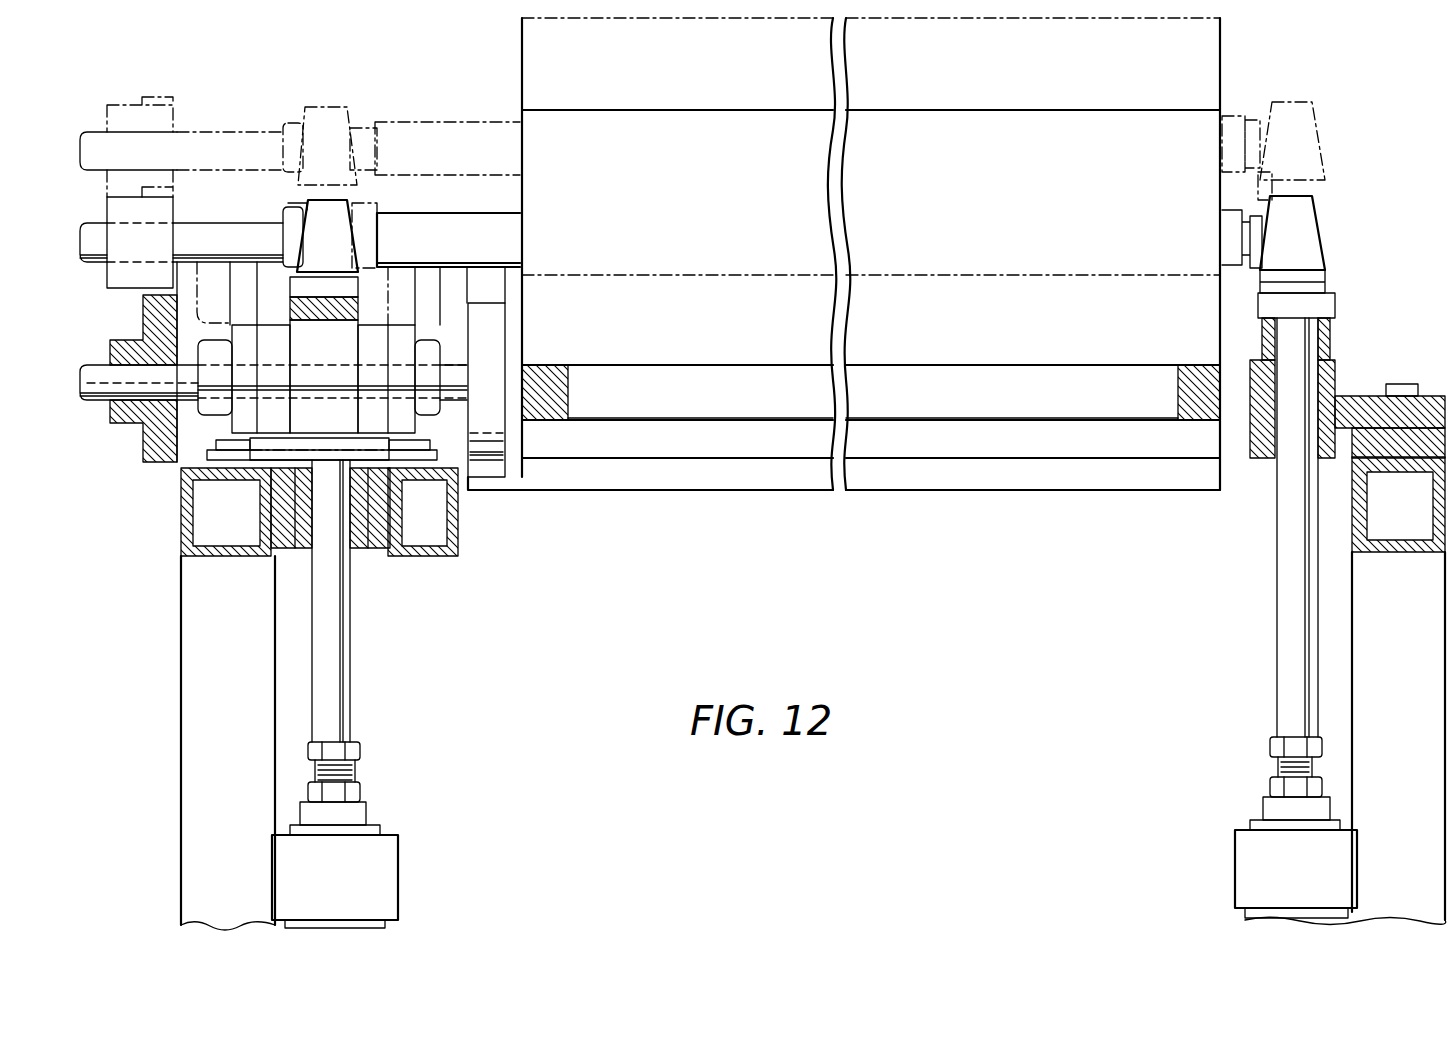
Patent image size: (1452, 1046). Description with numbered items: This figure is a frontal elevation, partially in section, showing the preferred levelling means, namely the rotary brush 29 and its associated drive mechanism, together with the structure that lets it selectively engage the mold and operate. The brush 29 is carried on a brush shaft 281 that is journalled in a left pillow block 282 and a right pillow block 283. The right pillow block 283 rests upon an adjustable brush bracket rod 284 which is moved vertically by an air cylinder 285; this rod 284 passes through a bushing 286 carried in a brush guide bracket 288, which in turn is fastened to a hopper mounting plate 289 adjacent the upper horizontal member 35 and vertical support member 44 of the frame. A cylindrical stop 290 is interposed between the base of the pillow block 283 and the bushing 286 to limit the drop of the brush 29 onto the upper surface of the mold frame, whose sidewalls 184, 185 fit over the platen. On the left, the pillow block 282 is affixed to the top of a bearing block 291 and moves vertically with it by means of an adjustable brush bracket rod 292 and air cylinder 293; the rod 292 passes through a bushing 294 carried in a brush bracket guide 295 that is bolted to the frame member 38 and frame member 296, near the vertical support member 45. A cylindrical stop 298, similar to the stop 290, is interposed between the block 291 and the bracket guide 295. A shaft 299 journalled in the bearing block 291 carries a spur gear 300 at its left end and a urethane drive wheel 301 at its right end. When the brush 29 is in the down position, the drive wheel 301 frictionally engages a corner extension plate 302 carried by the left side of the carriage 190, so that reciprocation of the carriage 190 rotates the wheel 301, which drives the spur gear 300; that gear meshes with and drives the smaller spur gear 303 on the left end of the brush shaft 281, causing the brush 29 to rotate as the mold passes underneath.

The rotary brush 29 is at (1203, 70).
The carriage 190 is at (955, 480).
The sidewall 184 is at (540, 385).
The sidewall 185 is at (1192, 376).
The drive wheel 301 is at (497, 345).
The corner extension plate 302 is at (505, 470).
The spur gear 303 is at (158, 218).
The left pillow block 282 is at (337, 220).
The brush shaft 281 is at (477, 223).
The bearing block 291 is at (355, 321).
The shaft 299 is at (312, 378).
The spur gear 300 is at (162, 441).
The brush bracket guide 295 is at (220, 461).
The horizontal member 38 is at (238, 558).
The frame member 296 is at (452, 518).
The cylindrical stop 298 is at (280, 483).
The bushing 294 is at (362, 538).
The vertical support member 45 is at (252, 668).
The adjustable brush bracket rod 292 is at (327, 675).
The air cylinder 293 is at (372, 878).
The right pillow block 283 is at (1288, 110).
The cylindrical stop 290 is at (1327, 334).
The bushing 286 is at (1322, 368).
The brush guide bracket 288 is at (1334, 392).
The hopper mounting plate 289 is at (1430, 448).
The upper horizontal member 35 is at (1357, 545).
The vertical support member 44 is at (1395, 665).
The adjustable brush bracket rod 284 is at (1297, 578).
The air cylinder 285 is at (1265, 852).